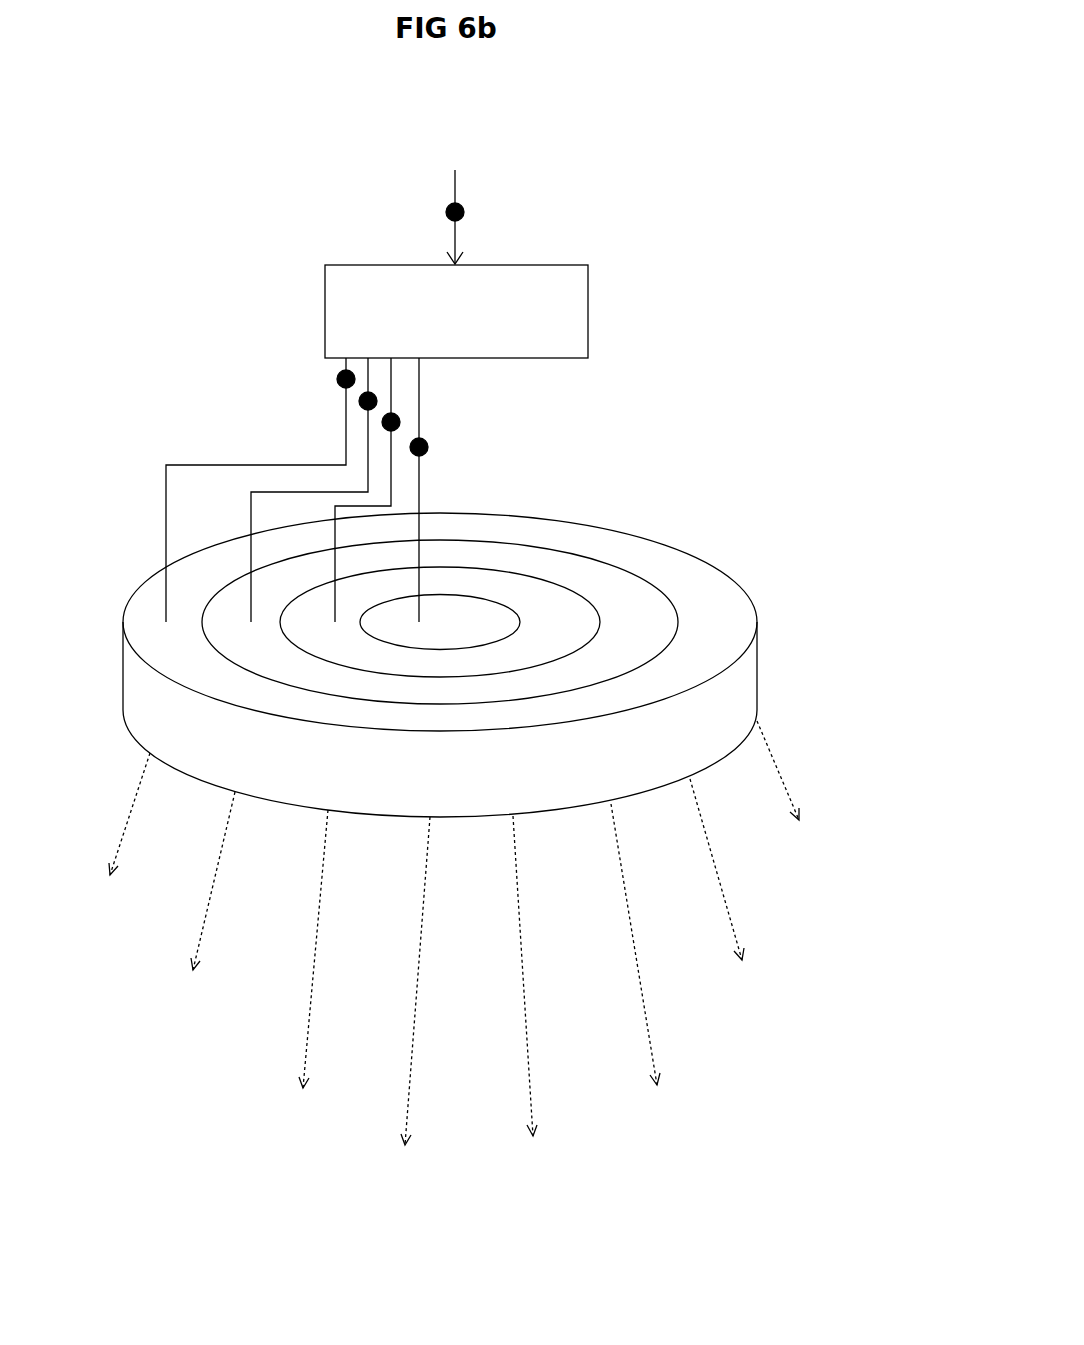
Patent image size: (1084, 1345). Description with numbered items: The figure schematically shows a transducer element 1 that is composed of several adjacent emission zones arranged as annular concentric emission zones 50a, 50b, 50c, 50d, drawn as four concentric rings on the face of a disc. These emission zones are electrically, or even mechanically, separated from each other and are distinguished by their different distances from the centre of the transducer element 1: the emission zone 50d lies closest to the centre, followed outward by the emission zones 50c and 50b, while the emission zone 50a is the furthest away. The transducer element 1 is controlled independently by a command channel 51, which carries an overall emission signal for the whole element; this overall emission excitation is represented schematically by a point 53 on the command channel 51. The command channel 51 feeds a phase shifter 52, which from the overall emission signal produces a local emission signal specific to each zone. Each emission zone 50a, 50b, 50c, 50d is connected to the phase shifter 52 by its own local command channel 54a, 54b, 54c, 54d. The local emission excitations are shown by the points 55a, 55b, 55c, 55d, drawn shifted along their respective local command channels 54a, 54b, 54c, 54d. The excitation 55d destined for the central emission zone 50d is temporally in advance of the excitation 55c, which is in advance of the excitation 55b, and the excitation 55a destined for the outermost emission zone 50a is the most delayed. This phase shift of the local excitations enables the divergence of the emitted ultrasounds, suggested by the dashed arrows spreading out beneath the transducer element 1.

The transducer element 1 is at (838, 661).
The command channel 51 is at (452, 181).
The phase shifter 52 is at (590, 322).
The point 53 is at (464, 212).
The local command channel 54a is at (165, 518).
The local command channel 54b is at (250, 540).
The local command channel 54c is at (334, 522).
The local command channel 54d is at (421, 395).
The local emission excitation 55a is at (340, 375).
The local emission excitation 55b is at (361, 400).
The local emission excitation 55c is at (384, 420).
The local emission excitation 55d is at (426, 448).
The emission zone 50a is at (717, 595).
The emission zone 50b is at (617, 592).
The emission zone 50c is at (565, 605).
The emission zone 50d is at (466, 605).